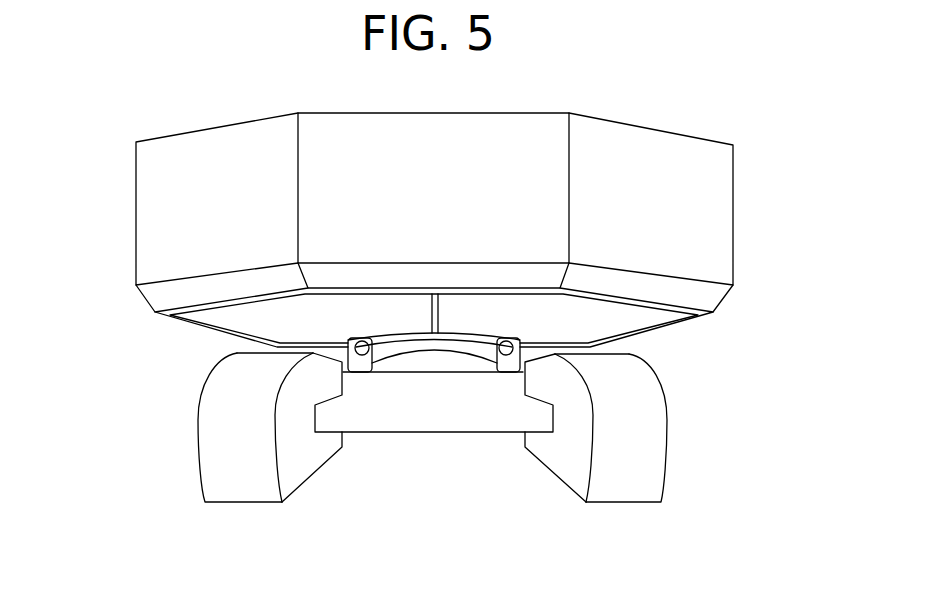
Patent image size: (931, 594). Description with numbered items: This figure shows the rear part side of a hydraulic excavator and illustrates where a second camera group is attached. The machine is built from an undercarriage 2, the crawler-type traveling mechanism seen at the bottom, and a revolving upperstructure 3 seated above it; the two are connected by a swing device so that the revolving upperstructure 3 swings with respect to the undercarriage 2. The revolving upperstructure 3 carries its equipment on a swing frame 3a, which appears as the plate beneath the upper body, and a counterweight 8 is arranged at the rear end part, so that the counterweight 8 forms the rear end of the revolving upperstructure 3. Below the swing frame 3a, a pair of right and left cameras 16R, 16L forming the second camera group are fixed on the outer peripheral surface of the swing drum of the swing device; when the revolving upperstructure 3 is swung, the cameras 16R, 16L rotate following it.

The undercarriage 2 is at (652, 442).
The revolving upperstructure 3 is at (417, 212).
The swing frame 3a is at (623, 320).
The counterweight 8 is at (163, 220).
The left camera 16L is at (362, 355).
The right camera 16R is at (503, 355).